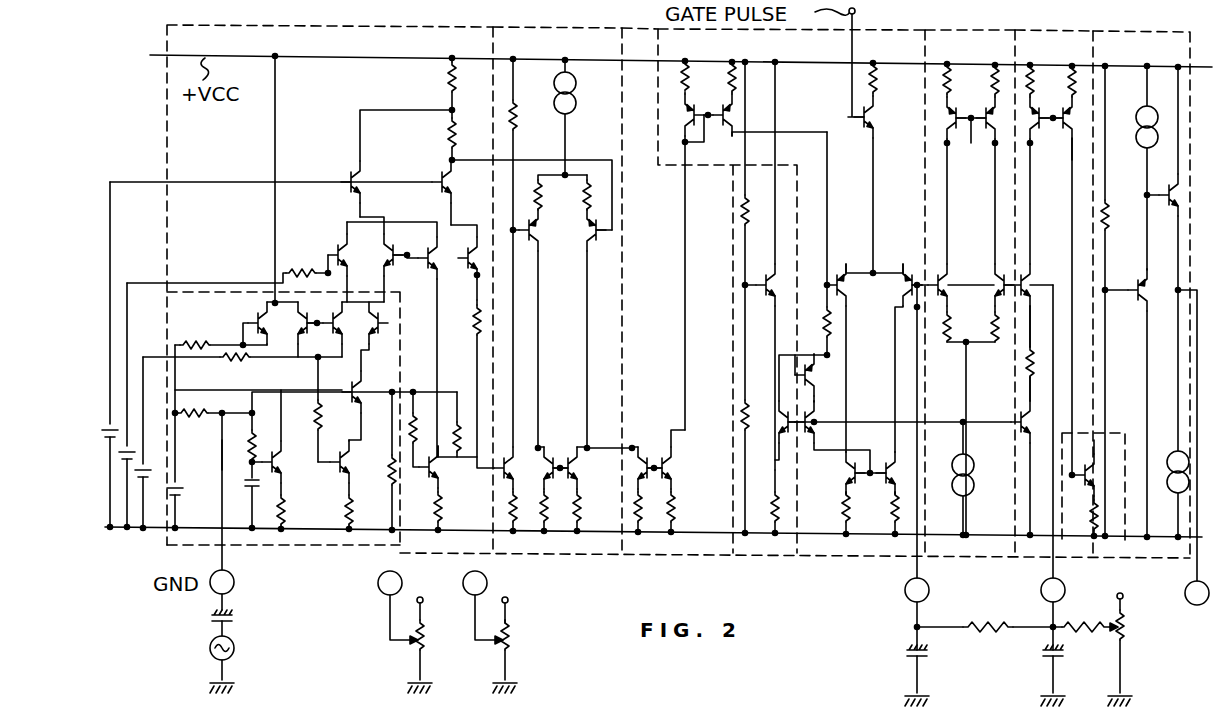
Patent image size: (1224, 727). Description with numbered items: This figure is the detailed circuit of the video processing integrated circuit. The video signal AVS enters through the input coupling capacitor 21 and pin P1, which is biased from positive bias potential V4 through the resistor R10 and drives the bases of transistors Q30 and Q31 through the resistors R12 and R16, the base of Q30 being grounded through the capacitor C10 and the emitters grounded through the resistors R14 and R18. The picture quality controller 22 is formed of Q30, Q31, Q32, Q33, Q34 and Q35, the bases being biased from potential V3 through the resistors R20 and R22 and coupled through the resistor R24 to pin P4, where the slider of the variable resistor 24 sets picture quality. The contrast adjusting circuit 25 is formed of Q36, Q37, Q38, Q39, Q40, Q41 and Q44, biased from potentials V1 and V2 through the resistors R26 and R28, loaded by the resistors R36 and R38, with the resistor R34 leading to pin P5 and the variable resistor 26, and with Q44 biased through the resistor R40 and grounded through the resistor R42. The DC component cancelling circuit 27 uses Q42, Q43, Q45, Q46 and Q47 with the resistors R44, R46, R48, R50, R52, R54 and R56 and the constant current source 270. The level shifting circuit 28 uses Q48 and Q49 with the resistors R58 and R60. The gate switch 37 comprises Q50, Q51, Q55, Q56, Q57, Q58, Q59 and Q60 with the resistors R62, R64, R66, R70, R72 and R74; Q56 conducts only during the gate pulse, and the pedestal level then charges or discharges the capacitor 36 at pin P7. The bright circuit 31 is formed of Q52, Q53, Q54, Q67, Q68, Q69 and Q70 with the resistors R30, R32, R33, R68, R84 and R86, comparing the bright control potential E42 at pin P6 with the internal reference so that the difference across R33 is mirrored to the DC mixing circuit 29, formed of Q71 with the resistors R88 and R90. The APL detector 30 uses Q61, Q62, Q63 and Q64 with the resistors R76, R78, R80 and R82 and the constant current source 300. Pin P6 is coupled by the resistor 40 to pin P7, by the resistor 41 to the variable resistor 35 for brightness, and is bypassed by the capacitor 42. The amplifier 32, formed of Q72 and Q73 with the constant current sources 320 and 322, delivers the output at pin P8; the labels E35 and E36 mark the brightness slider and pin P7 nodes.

The contrast adjusting circuit 25 is at (404, 14).
The DC component cancelling circuit 27 is at (570, 14).
The gate switch 37 is at (888, 16).
The APL detector 30 is at (980, 16).
The bright circuit 31 is at (1062, 16).
The amplifier 32 is at (1144, 16).
The constant current source 320 is at (1156, 75).
The constant current source 270 is at (575, 105).
The picture quality controller 22 is at (320, 560).
The input coupling capacitor 21 is at (244, 628).
The variable resistor 24 is at (410, 645).
The variable resistor 26 is at (494, 645).
The level shifting circuit 28 is at (655, 565).
The DC mixing circuit 29 is at (1128, 558).
The constant current source 300 is at (953, 490).
The constant current source 322 is at (1175, 536).
The variable resistor 35 is at (1127, 631).
The capacitor 36 is at (901, 657).
The resistor 40 is at (979, 636).
The resistor 41 is at (1087, 635).
The capacitor 42 is at (1043, 657).
The positive bias potential V1 is at (102, 525).
The positive bias potential V2 is at (132, 540).
The positive bias potential V3 is at (158, 470).
The positive bias potential V4 is at (178, 500).
The capacitor C10 is at (244, 483).
The terminal pin P1 is at (236, 511).
The terminal pin P4 is at (404, 607).
The terminal pin P5 is at (480, 588).
The terminal pin P6 is at (1067, 456).
The terminal pin P7 is at (931, 600).
The terminal pin P8 is at (1199, 447).
The video signal AVS is at (243, 664).
The node E35 is at (1115, 624).
The node E36 is at (910, 627).
The bright control potential E42 is at (1045, 626).
The resistor R10 is at (198, 406).
The resistor R12 is at (262, 443).
The resistor R14 is at (223, 548).
The resistor R16 is at (285, 466).
The resistor R18 is at (320, 535).
The resistor R20 is at (187, 340).
The resistor R22 is at (224, 360).
The resistor R24 is at (350, 495).
The resistor R26 is at (227, 263).
The resistor R28 is at (457, 418).
The resistor R30 is at (741, 216).
The resistor R32 is at (742, 418).
The resistor R33 is at (1025, 367).
The resistor R34 is at (478, 333).
The resistor R36 is at (451, 137).
The resistor R38 is at (451, 82).
The resistor R40 is at (411, 413).
The resistor R42 is at (388, 535).
The resistor R44 is at (513, 412).
The resistor R46 is at (457, 532).
The resistor R48 is at (513, 121).
The resistor R50 is at (536, 180).
The resistor R52 is at (541, 200).
The resistor R54 is at (529, 605).
The resistor R56 is at (545, 533).
The resistor R58 is at (637, 541).
The resistor R60 is at (678, 541).
The resistor R62 is at (688, 75).
The resistor R64 is at (737, 84).
The resistor R66 is at (826, 302).
The resistor R68 is at (779, 493).
The resistor R70 is at (873, 88).
The resistor R72 is at (846, 528).
The resistor R74 is at (885, 528).
The resistor R76 is at (940, 350).
The resistor R78 is at (1007, 330).
The resistor R80 is at (952, 73).
The resistor R82 is at (978, 87).
The resistor R84 is at (1030, 73).
The resistor R86 is at (1056, 87).
The resistor R88 is at (1076, 505).
The resistor R90 is at (1120, 226).
The NPN transistor Q30 is at (284, 471).
The NPN transistor Q31 is at (345, 492).
The NPN transistor Q32 is at (243, 323).
The NPN transistor Q33 is at (283, 352).
The NPN transistor Q34 is at (344, 347).
The NPN transistor Q35 is at (352, 395).
The NPN transistor Q36 is at (330, 248).
The NPN transistor Q37 is at (388, 234).
The NPN transistor Q38 is at (429, 272).
The NPN transistor Q39 is at (478, 236).
The NPN transistor Q40 is at (360, 183).
The NPN transistor Q41 is at (451, 180).
The PNP transistor Q42 is at (539, 238).
The PNP transistor Q43 is at (602, 246).
The NPN transistor Q44 is at (438, 473).
The NPN transistor Q45 is at (510, 458).
The NPN transistor Q46 is at (543, 460).
The NPN transistor Q47 is at (581, 535).
The NPN transistor Q48 is at (645, 460).
The NPN transistor Q49 is at (680, 528).
The PNP transistor Q50 is at (680, 140).
The PNP transistor Q51 is at (737, 121).
The NPN transistor Q52 is at (754, 292).
The PNP transistor Q53 is at (780, 425).
The PNP transistor Q54 is at (821, 415).
The NPN transistor Q55 is at (821, 380).
The PNP transistor Q56 is at (873, 119).
The PNP transistor Q57 is at (844, 285).
The PNP transistor Q58 is at (894, 291).
The NPN transistor Q59 is at (858, 453).
The NPN transistor Q60 is at (893, 467).
The PNP transistor Q61 is at (945, 120).
The PNP transistor Q62 is at (988, 157).
The NPN transistor Q63 is at (956, 227).
The NPN transistor Q64 is at (995, 275).
The NPN transistor Q67 is at (1035, 268).
The PNP transistor Q68 is at (1017, 424).
The PNP transistor Q69 is at (1053, 145).
The PNP transistor Q70 is at (1072, 146).
The NPN transistor Q71 is at (1095, 467).
The PNP transistor Q72 is at (1132, 313).
The NPN transistor Q73 is at (1160, 190).